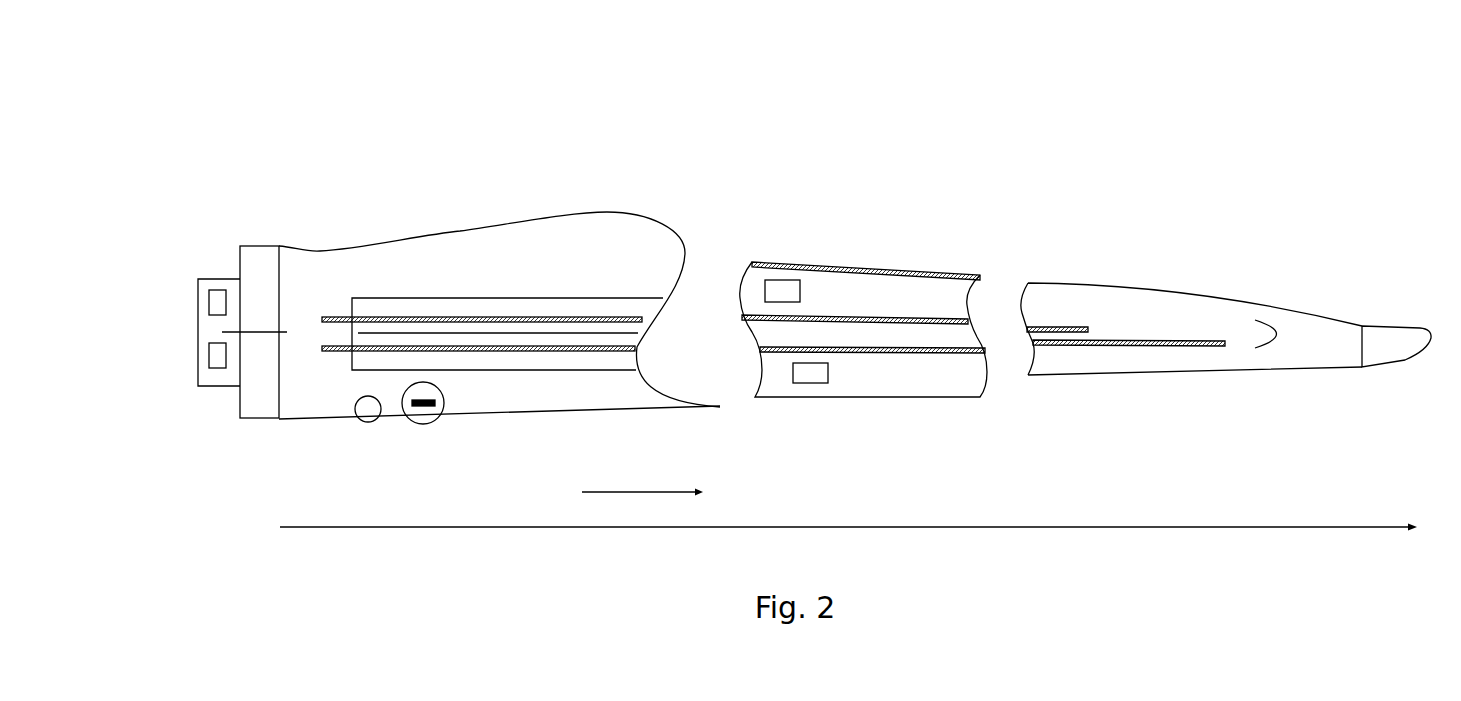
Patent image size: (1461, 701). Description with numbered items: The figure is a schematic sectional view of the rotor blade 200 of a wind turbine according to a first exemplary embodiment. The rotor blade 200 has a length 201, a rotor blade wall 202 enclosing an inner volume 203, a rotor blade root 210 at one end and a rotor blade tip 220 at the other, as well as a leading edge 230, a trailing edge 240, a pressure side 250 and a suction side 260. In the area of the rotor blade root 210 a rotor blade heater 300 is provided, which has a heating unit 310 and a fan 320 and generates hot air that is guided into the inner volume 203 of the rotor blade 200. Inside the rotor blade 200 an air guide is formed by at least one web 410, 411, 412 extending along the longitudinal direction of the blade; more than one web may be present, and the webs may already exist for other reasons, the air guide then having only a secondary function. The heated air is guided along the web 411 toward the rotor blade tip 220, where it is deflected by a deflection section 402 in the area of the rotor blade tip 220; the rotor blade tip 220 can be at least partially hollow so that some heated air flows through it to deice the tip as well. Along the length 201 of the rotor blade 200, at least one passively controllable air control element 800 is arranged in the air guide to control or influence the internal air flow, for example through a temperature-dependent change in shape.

The rotor blade 200 is at (810, 230).
The length 201 is at (568, 395).
The rotor blade wall 202 is at (933, 397).
The inner volume 203 is at (523, 238).
The rotor blade root 210 is at (238, 278).
The rotor blade tip 220 is at (1382, 327).
The leading edge 230 is at (493, 397).
The trailing edge 240 is at (418, 225).
The pressure side 250 is at (1178, 378).
The suction side 260 is at (465, 175).
The rotor blade heater 300 is at (213, 378).
The heating unit 310 is at (208, 303).
The fan 320 is at (208, 357).
The deflection section 402 is at (1265, 347).
The web 410 is at (607, 348).
The web 411 is at (848, 315).
The web 412 is at (903, 352).
The passively controllable air control element 800 is at (782, 278).